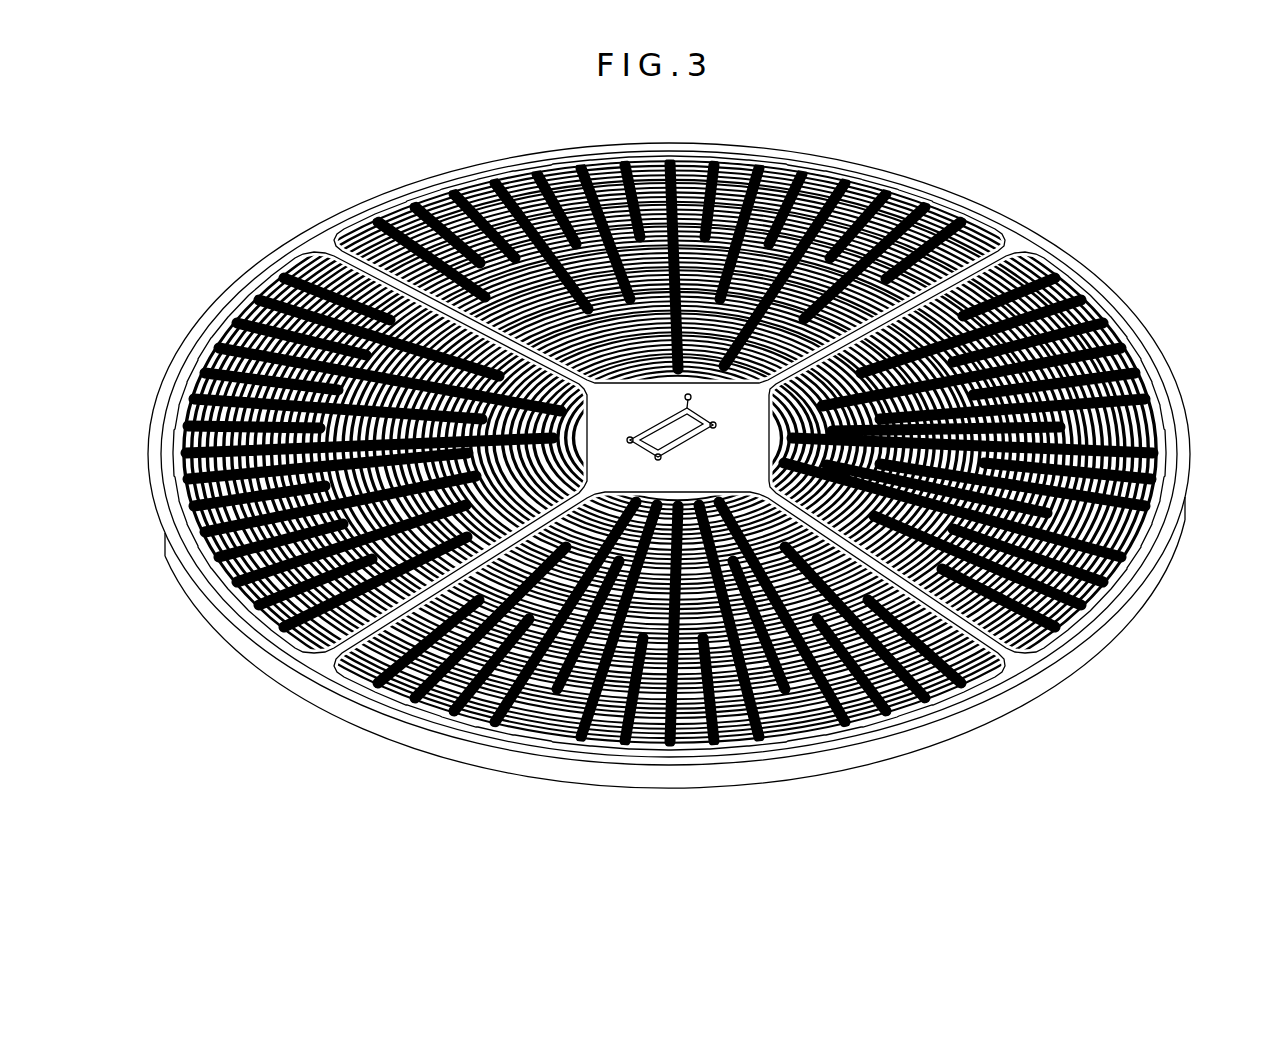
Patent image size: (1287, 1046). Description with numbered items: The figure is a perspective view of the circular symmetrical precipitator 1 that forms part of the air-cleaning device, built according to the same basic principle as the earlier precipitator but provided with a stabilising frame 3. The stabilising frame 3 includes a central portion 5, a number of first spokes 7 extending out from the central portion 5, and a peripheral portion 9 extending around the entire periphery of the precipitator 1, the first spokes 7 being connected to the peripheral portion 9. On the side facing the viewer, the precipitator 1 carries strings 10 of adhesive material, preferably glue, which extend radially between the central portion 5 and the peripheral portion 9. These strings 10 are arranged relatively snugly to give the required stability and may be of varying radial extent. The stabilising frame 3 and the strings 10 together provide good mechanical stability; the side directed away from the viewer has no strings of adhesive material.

The precipitator 1 is at (1086, 228).
The stabilising frame 3 is at (733, 424).
The central portion 5 is at (733, 398).
The first spokes 7 is at (952, 265).
The peripheral portion 9 is at (202, 325).
The strings of adhesive material 10 is at (1158, 488).